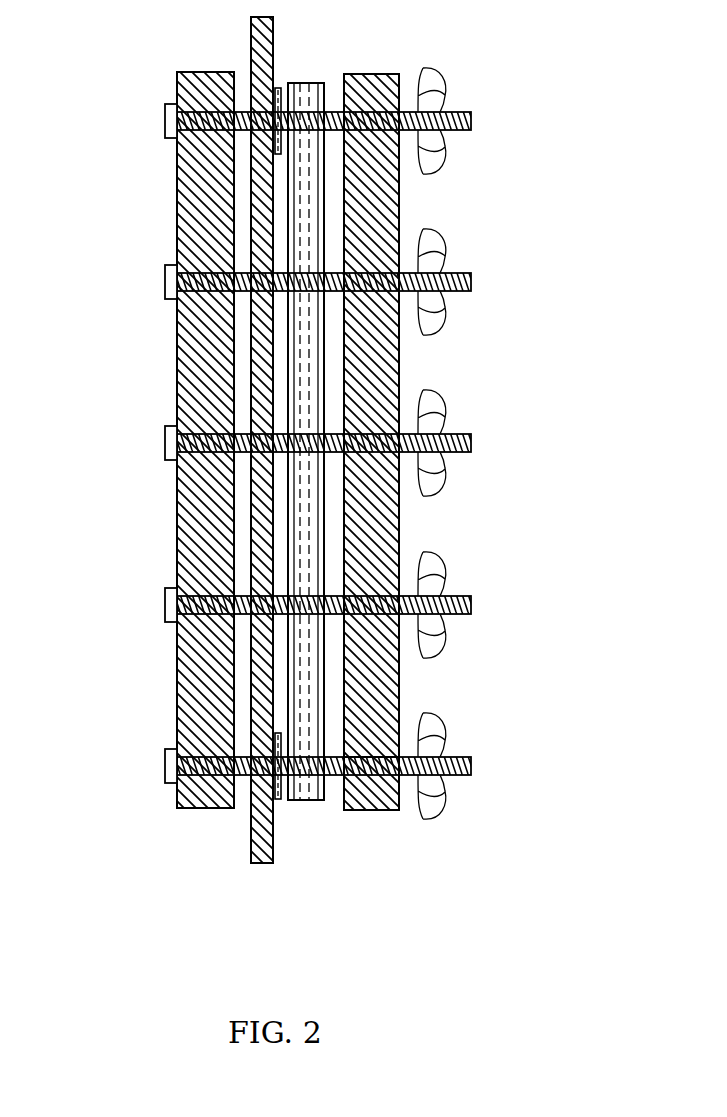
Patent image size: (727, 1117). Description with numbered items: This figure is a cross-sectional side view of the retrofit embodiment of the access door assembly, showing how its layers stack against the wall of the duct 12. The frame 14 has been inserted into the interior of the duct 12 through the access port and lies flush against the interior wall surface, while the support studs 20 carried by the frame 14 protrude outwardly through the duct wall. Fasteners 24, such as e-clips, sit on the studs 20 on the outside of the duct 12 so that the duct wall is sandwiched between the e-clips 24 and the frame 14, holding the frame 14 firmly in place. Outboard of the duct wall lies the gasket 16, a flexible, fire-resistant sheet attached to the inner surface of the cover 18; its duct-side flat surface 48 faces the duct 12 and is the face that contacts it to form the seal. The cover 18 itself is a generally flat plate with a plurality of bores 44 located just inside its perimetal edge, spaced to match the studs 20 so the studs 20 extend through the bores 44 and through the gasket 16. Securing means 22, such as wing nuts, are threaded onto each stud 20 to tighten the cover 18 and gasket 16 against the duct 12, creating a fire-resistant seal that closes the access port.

The duct 12 is at (255, 872).
The frame 14 is at (203, 814).
The gasket 16 is at (451, 506).
The cover 18 is at (386, 820).
The support studs 20 is at (480, 768).
The securing means 22 is at (454, 799).
The fasteners 24 is at (277, 811).
The bores 44 is at (360, 746).
The duct-side flat surface 48 is at (330, 529).